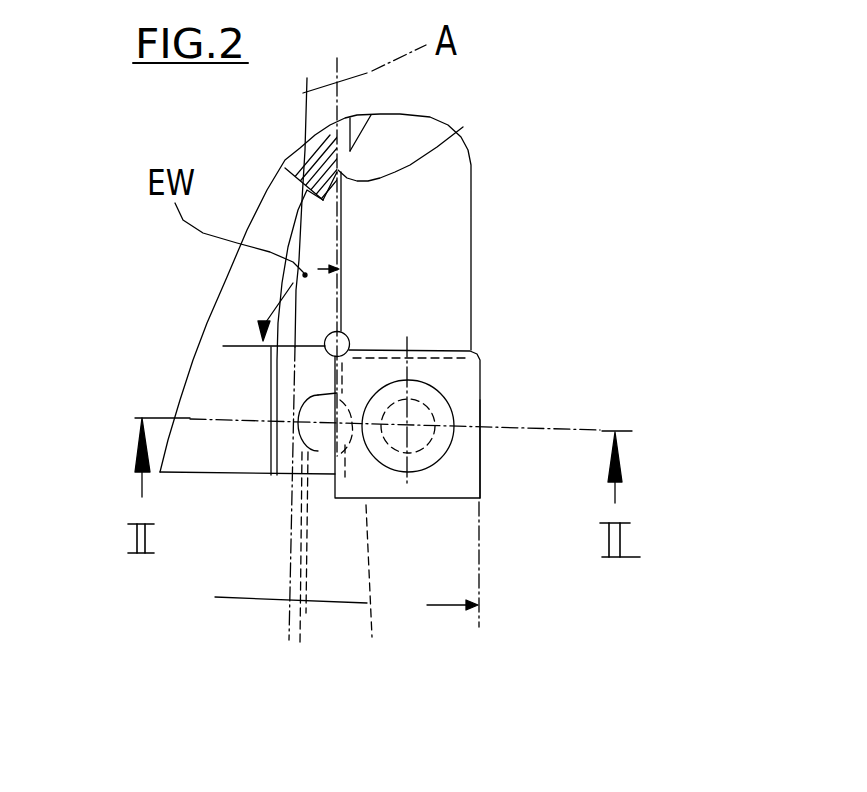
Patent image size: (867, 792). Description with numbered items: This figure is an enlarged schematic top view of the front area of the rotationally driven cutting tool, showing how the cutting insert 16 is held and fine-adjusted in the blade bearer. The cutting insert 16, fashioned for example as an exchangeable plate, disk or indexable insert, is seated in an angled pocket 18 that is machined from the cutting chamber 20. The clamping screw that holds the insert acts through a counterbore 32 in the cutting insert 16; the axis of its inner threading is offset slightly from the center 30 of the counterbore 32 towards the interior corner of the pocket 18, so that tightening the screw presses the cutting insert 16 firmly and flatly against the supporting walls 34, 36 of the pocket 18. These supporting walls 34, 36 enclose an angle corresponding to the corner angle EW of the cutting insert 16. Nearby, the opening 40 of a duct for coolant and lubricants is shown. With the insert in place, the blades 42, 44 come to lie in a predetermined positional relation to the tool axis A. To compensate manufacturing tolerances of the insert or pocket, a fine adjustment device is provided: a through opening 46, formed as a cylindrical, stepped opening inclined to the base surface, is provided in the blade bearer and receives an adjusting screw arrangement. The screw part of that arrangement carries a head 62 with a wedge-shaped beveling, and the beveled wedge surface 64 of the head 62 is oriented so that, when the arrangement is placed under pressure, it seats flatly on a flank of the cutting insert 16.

The cutting insert 16 is at (446, 489).
The pocket 18 is at (501, 271).
The cutting chamber 20 is at (428, 286).
The center 30 is at (473, 415).
The counterbore 32 is at (482, 383).
The supporting wall 34 is at (365, 595).
The supporting wall 36 is at (415, 355).
The opening of a duct for coolant and lubricants 40 is at (452, 125).
The blade 42 is at (410, 500).
The blade 44 is at (483, 452).
The through opening 46 is at (221, 442).
The head 62 is at (275, 530).
The beveled wedge surface 64 is at (297, 574).